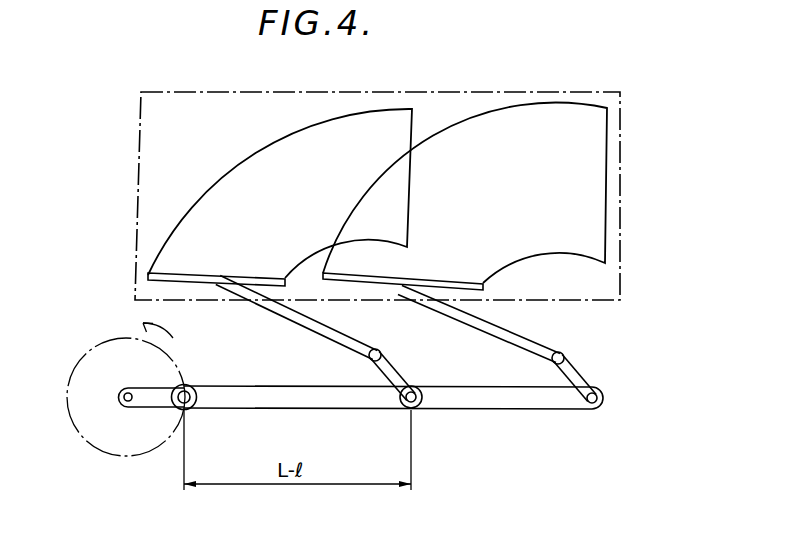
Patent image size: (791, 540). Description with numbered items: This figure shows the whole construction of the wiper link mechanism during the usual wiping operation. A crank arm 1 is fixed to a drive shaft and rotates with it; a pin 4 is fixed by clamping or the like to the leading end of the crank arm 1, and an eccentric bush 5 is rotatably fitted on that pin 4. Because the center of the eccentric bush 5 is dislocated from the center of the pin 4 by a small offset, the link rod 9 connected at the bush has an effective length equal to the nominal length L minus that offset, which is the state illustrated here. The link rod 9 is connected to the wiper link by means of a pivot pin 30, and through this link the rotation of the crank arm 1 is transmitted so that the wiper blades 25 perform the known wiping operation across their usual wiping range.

The crank arm 1 is at (152, 402).
The pin 4 is at (195, 389).
The bush 5 is at (179, 388).
The link rod 9 is at (324, 402).
The wiper blades 25 is at (177, 278).
The pivot pin 30 is at (416, 406).